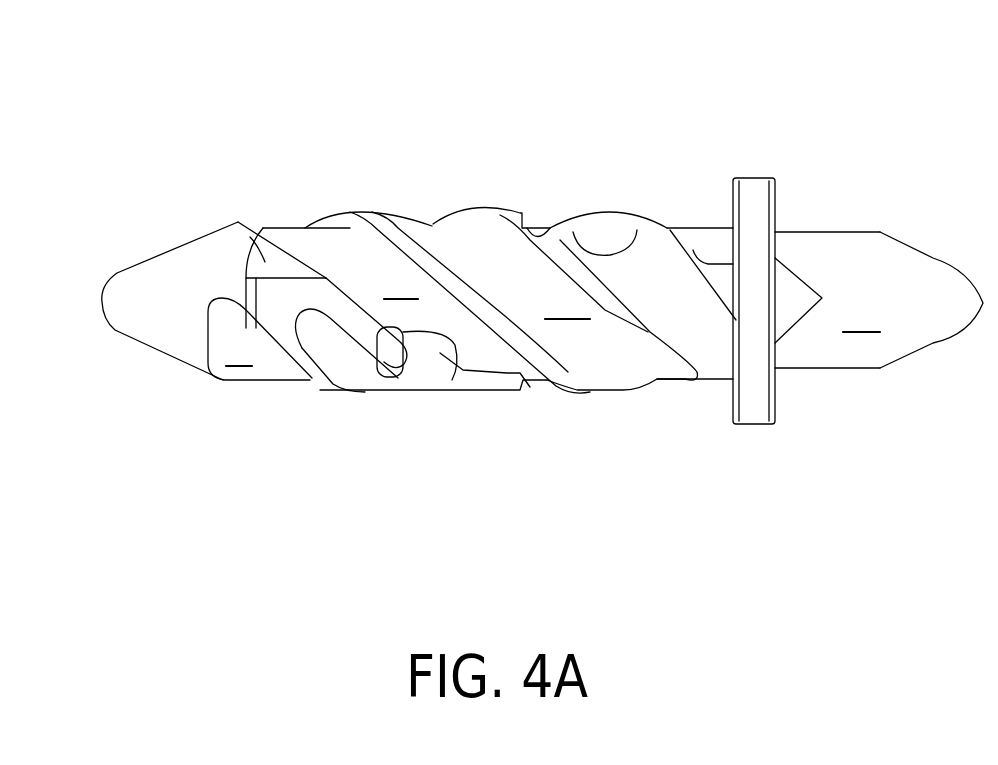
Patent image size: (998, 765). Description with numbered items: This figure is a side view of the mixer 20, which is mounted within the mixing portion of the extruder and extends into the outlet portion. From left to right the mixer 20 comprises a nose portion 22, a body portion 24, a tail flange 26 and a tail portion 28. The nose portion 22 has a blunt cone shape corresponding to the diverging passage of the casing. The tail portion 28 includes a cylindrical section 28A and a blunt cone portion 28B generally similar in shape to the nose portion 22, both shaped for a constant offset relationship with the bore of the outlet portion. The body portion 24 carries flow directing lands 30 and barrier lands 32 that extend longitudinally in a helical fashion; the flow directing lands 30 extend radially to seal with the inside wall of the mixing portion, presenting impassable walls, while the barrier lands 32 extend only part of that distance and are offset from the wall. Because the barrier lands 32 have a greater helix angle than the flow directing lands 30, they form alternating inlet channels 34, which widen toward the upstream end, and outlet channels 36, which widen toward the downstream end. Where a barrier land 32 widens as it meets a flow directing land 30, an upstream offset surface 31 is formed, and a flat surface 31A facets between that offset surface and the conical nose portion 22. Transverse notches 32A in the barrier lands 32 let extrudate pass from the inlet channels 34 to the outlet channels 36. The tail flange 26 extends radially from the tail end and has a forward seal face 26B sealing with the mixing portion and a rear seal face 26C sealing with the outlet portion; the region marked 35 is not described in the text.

The mixer 20 is at (290, 148).
The nose portion 22 is at (103, 353).
The body portion 24 is at (735, 438).
The tail flange 26 is at (762, 331).
The forward seal face 26B is at (733, 410).
The rear seal face 26C is at (775, 397).
The tail portion 28 is at (882, 271).
The cylindrical section 28A is at (812, 230).
The blunt cone portion 28B is at (931, 250).
The flow directing land 30 is at (405, 236).
The upstream offset surface 31 is at (289, 297).
The flat surface 31A is at (258, 248).
The barrier land 32 is at (567, 230).
The transverse notch 32A is at (545, 228).
The inlet channel 34 is at (597, 237).
The rear flight 35 is at (657, 297).
The outlet channel 36 is at (703, 250).